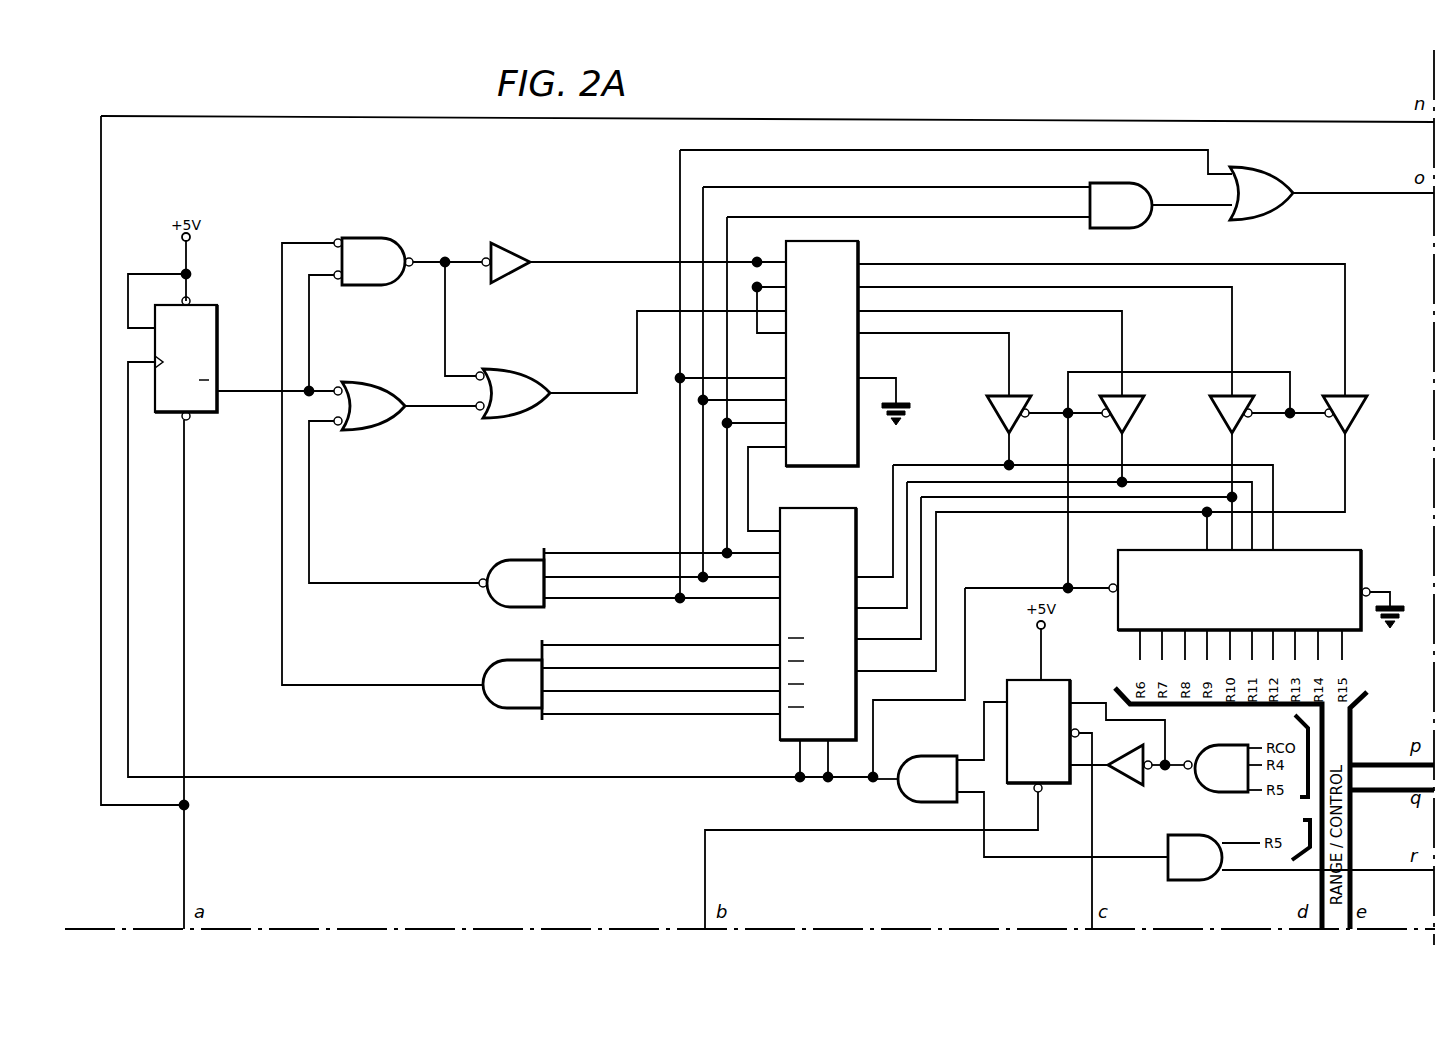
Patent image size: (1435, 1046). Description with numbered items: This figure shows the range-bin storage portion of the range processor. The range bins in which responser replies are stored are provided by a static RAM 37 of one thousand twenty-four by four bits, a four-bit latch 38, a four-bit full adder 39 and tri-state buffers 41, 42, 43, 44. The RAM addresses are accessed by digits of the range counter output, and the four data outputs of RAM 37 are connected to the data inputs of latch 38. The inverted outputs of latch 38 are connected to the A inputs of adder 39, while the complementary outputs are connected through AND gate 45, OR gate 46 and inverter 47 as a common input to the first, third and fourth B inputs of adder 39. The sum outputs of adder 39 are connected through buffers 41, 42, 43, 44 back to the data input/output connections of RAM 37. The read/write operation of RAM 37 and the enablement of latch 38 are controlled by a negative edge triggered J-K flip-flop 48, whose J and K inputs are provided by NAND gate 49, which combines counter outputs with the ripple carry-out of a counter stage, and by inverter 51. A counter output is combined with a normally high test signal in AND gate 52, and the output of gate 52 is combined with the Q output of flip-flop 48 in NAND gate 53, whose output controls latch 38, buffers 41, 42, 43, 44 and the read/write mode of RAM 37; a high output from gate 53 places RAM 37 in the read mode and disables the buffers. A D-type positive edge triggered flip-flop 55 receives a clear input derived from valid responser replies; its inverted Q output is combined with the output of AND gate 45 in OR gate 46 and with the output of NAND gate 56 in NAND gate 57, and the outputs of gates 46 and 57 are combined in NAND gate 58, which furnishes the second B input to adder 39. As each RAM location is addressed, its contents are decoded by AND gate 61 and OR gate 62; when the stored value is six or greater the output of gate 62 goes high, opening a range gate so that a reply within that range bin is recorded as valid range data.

The static RAM 37 is at (1330, 550).
The latch 38 is at (808, 508).
The full adder 39 is at (858, 247).
The tri-state buffer 41 is at (1352, 422).
The tri-state buffer 42 is at (1240, 422).
The tri-state buffer 43 is at (1130, 422).
The tri-state buffer 44 is at (992, 420).
The AND gate 45 is at (512, 660).
The OR gate 46 is at (362, 238).
The inverter 47 is at (505, 243).
The J-K negative edge triggered flip-flop 48 is at (1022, 680).
The NAND gate 49 is at (1210, 748).
The inverter 51 is at (1130, 787).
The AND gate 52 is at (1194, 836).
The NAND gate 53 is at (940, 749).
The D-type positive edge triggered flip-flop 55 is at (217, 309).
The NAND gate 56 is at (510, 560).
The NAND gate 57 is at (365, 383).
The NAND gate 58 is at (522, 365).
The AND gate 61 is at (1148, 225).
The OR gate 62 is at (1275, 215).